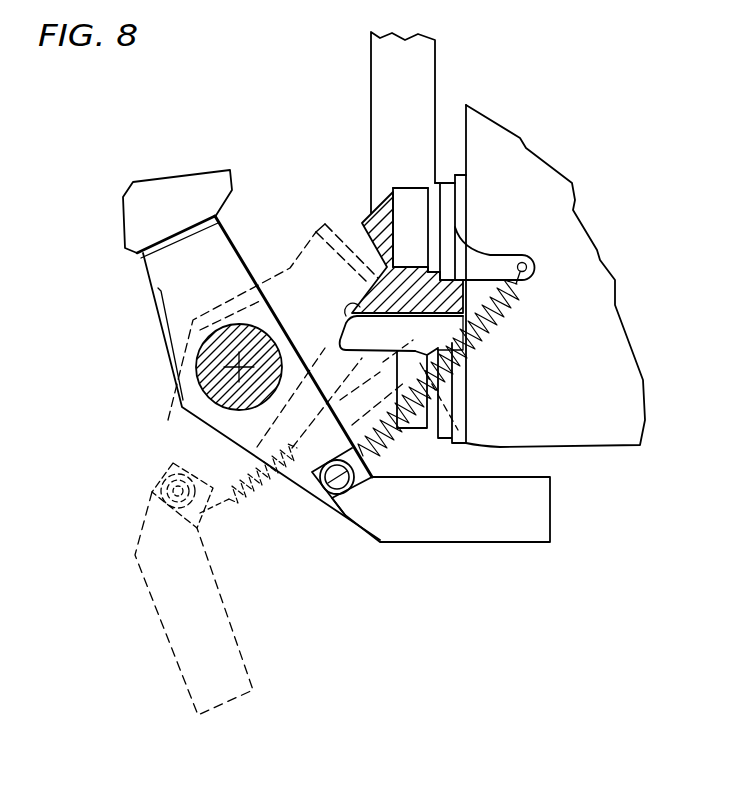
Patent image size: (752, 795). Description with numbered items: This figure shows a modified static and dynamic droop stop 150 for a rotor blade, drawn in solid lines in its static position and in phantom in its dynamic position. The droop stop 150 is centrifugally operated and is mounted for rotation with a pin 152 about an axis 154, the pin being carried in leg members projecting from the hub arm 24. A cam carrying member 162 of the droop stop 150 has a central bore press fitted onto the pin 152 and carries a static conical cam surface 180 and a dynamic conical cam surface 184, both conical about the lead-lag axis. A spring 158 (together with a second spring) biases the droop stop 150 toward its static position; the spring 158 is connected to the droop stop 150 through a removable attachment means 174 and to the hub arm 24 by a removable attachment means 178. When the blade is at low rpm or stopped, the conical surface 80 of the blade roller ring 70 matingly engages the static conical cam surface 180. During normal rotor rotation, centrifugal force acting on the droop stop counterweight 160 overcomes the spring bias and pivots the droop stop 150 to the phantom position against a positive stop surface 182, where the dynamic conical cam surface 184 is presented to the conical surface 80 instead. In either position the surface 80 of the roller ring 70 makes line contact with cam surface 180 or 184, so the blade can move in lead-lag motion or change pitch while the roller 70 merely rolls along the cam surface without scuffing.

The hub arm 24 is at (633, 360).
The blade roller ring 70 is at (165, 182).
The conical surface 80 is at (270, 451).
The droop stop 150 is at (431, 545).
The pin 152 is at (267, 338).
The axis 154 is at (198, 381).
The spring 158 is at (507, 323).
The droop stop counterweight 160 is at (552, 508).
The cam carrying member 162 is at (237, 250).
The removable attachment means 174 is at (376, 470).
The removable attachment means 178 is at (500, 257).
The static conical cam surface 180 is at (170, 225).
The positive stop surface 182 is at (401, 328).
The dynamic conical cam surface 184 is at (258, 304).